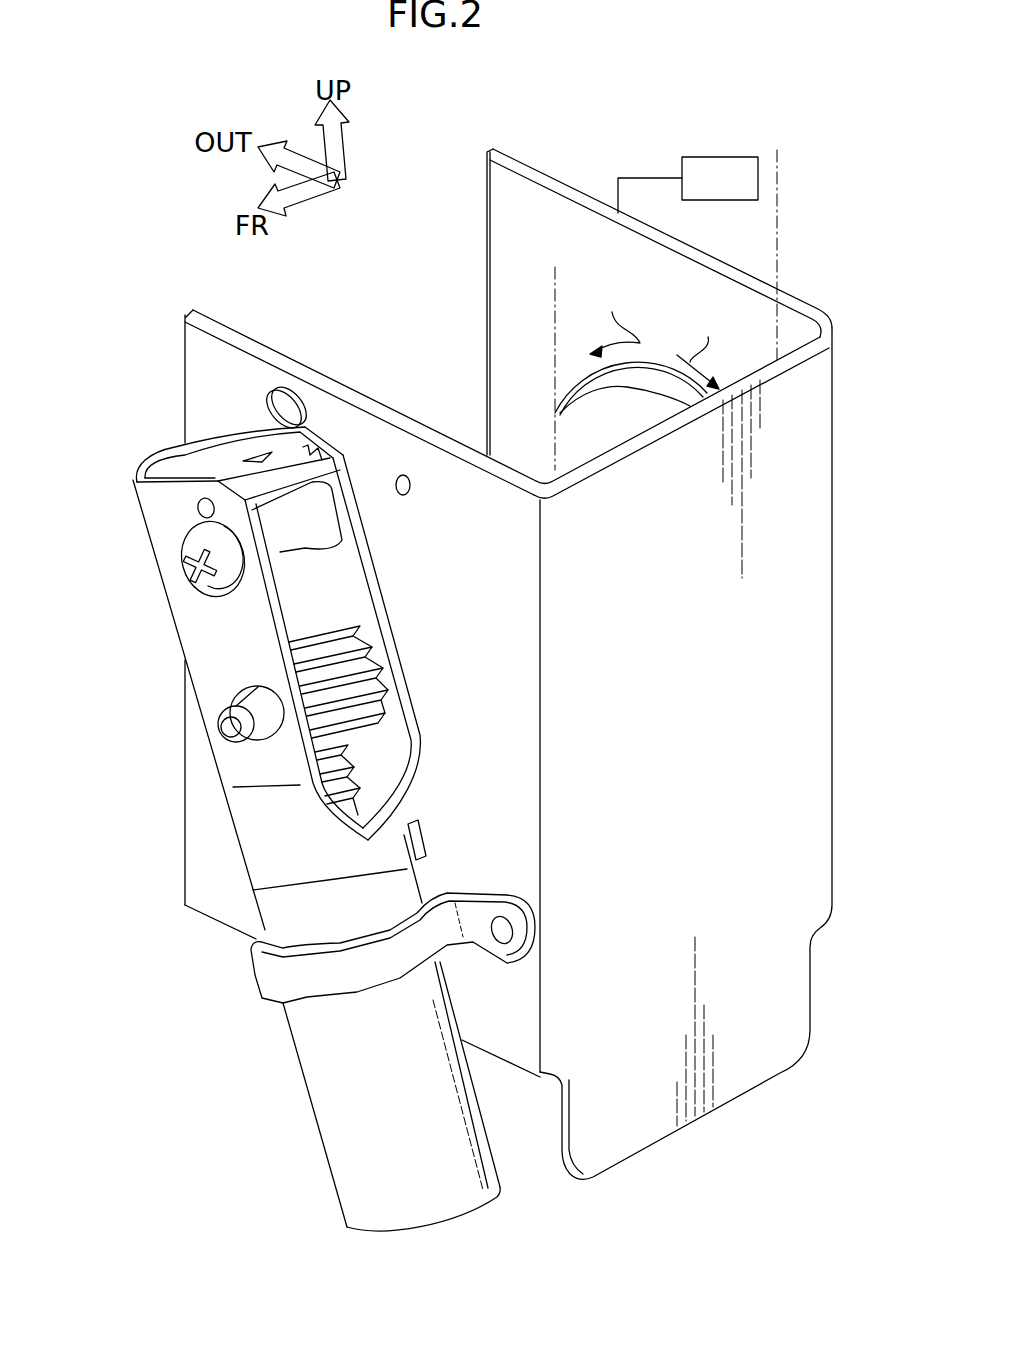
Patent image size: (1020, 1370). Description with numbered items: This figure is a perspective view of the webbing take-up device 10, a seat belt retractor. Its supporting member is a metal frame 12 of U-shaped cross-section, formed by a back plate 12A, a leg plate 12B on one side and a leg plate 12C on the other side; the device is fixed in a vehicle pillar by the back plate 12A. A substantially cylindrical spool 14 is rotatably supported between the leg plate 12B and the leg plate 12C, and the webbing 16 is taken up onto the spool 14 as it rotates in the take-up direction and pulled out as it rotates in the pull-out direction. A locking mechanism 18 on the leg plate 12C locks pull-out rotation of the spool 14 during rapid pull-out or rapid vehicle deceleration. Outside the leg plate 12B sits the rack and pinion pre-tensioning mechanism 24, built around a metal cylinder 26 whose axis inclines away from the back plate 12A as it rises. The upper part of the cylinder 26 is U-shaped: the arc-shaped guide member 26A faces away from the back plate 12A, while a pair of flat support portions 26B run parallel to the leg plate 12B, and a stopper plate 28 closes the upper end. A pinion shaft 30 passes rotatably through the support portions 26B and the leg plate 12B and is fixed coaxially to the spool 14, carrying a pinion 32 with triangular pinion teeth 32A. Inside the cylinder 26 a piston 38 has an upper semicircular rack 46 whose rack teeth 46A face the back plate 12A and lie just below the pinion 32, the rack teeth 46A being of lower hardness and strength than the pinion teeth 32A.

The webbing take-up device 10 is at (134, 258).
The frame 12 is at (566, 185).
The back plate 12A is at (660, 1142).
The leg plate 12B is at (185, 360).
The leg plate 12C is at (487, 250).
The spool 14 is at (522, 428).
The webbing 16 is at (779, 228).
The locking mechanism 18 is at (720, 157).
The pre-tensioning mechanism 24 is at (400, 624).
The cylinder 26 is at (307, 1100).
The guide member 26A is at (150, 462).
The support portions 26B is at (232, 633).
The stopper plate 28 is at (235, 473).
The pinion shaft 30 is at (232, 727).
The pinion 32 is at (322, 622).
The pinion teeth 32A is at (368, 730).
The piston 38 is at (423, 777).
The rack 46 is at (347, 780).
The rack teeth 46A is at (343, 748).